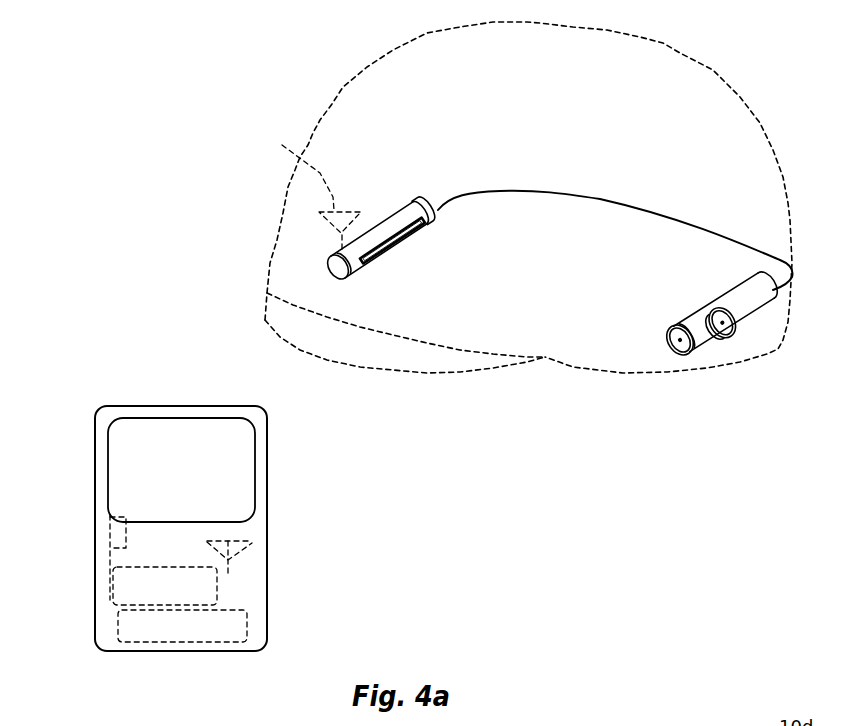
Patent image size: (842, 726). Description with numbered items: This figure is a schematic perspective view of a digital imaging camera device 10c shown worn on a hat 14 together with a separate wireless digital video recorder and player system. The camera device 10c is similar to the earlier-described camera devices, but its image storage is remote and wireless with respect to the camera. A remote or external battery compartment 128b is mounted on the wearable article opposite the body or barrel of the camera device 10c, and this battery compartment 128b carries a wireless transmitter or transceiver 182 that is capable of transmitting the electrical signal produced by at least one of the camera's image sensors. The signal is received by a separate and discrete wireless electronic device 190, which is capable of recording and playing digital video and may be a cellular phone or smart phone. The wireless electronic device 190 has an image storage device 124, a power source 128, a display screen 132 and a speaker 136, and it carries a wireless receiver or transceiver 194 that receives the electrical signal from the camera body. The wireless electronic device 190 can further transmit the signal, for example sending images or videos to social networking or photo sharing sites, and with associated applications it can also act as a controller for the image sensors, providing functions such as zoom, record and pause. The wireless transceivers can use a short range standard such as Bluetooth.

The user's head 14 is at (680, 53).
The camera device 10c is at (710, 278).
The battery compartment 128b is at (397, 212).
The wireless transmitter or transceiver 182 is at (299, 192).
The wireless electronic device 190 is at (172, 372).
The display screen 132 is at (210, 447).
The speaker 136 is at (110, 532).
The image storage device 124 is at (123, 585).
The power source 128 is at (243, 633).
The wireless receiver or transceiver 194 is at (258, 557).